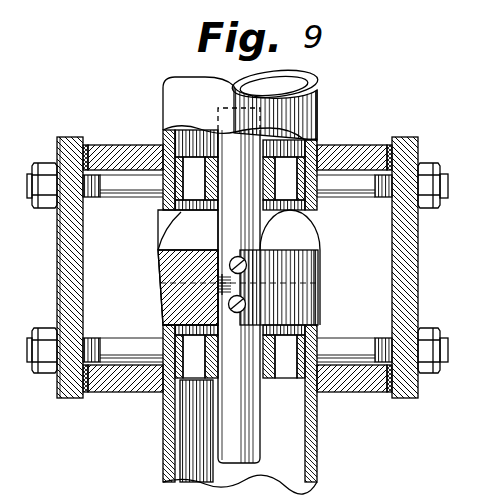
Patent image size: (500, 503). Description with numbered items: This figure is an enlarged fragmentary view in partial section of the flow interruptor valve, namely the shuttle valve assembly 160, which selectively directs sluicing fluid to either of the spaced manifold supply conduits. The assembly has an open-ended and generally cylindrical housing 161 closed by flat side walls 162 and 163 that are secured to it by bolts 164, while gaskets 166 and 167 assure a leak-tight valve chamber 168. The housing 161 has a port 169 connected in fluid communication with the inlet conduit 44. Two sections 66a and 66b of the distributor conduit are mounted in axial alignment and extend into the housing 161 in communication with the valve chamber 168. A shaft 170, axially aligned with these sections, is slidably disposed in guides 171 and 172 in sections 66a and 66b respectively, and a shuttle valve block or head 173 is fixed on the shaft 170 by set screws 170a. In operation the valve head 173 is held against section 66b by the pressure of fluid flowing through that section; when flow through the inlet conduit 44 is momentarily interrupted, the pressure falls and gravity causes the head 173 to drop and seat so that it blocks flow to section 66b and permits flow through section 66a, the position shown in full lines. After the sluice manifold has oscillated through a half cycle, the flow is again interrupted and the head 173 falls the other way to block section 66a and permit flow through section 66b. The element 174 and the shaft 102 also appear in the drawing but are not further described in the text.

The shuttle valve assembly 160 is at (70, 134).
The housing 161 is at (144, 147).
The flat side wall 162 is at (65, 268).
The flat side wall 163 is at (410, 260).
The bolts 164 is at (132, 188).
The gasket 166 is at (86, 144).
The gasket 167 is at (390, 138).
The valve chamber 168 is at (364, 322).
The port 169 is at (302, 220).
The shaft 170 is at (220, 232).
The set screws 170a is at (323, 226).
The guide 171 is at (283, 165).
The guide 172 is at (283, 350).
The shuttle valve block or head 173 is at (322, 240).
The bearing race 174 is at (293, 328).
The inlet conduit 44 is at (322, 238).
The distributor conduit section 66a is at (307, 107).
The distributor conduit section 66b is at (315, 444).
The shaft 102 is at (131, 285).